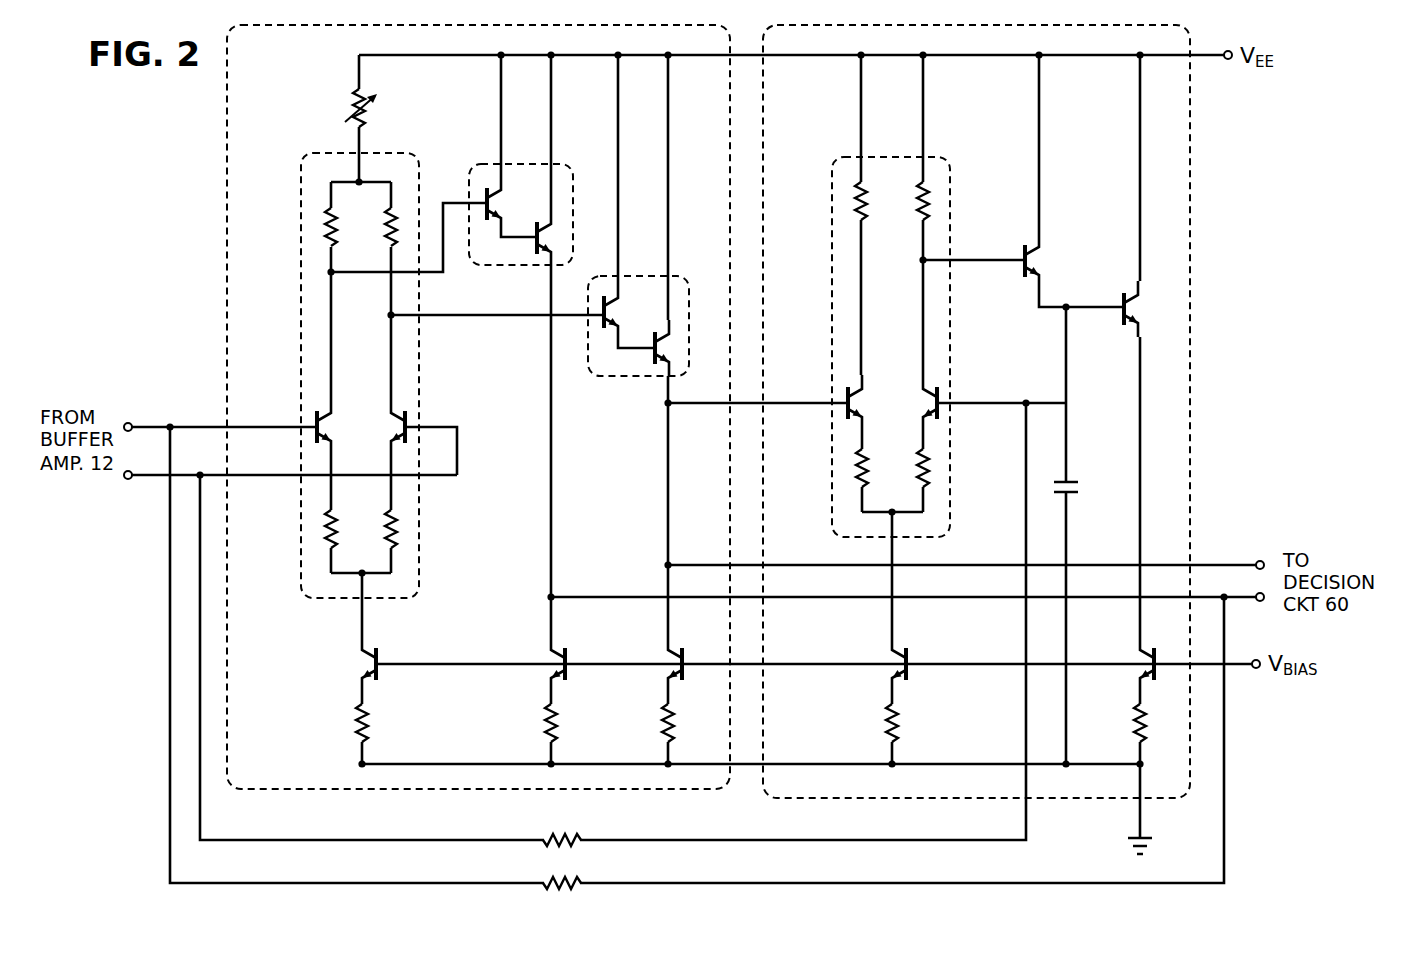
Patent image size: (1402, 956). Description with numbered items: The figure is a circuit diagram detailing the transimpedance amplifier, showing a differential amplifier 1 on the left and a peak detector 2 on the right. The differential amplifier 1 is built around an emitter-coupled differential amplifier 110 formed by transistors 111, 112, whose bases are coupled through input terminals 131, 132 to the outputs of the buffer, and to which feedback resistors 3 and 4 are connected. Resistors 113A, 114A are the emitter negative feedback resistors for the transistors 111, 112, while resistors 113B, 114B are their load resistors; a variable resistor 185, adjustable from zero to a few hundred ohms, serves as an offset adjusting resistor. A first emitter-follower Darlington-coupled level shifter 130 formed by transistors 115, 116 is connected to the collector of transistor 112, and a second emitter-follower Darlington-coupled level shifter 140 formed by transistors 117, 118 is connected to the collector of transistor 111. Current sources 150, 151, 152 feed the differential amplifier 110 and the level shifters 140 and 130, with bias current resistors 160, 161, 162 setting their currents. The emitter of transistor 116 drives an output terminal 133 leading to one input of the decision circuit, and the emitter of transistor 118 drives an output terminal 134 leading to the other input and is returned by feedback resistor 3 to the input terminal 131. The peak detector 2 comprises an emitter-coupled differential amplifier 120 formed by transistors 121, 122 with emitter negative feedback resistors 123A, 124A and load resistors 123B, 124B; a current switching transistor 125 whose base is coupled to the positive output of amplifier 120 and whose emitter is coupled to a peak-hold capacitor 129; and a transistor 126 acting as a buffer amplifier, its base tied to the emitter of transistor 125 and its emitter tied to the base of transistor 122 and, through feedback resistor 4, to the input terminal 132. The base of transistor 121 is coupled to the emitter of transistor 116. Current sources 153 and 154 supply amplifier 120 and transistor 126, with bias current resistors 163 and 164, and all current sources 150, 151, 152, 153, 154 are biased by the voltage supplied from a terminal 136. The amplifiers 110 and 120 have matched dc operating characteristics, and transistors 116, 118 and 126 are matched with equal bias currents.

The differential amplifier 1 is at (226, 206).
The peak detector 2 is at (1190, 204).
The feedback resistor 3 is at (566, 879).
The feedback resistor 4 is at (566, 836).
The emitter-coupled differential amplifier 110 is at (400, 153).
The transistor 111 is at (314, 421).
The transistor 112 is at (409, 421).
The emitter negative feedback resistor 113A is at (326, 532).
The load resistor 113B is at (323, 229).
The emitter negative feedback resistor 114A is at (396, 532).
The load resistor 114B is at (384, 233).
The transistor 115 is at (607, 319).
The transistor 116 is at (653, 359).
The transistor 117 is at (490, 205).
The transistor 118 is at (535, 251).
The emitter-coupled differential amplifier 120 is at (892, 157).
The transistor 121 is at (845, 401).
The transistor 122 is at (941, 401).
The emitter negative feedback resistor 123A is at (857, 475).
The load resistor 123B is at (857, 197).
The emitter negative feedback resistor 124A is at (928, 475).
The load resistor 124B is at (927, 197).
The current switching transistor 125 is at (1030, 259).
The transistor 126 is at (1121, 301).
The peak-hold capacitor 129 is at (1073, 484).
The first emitter-follower Darlington-coupled level shifter 130 is at (640, 276).
The input terminal 131 is at (130, 421).
The input terminal 132 is at (128, 481).
The output terminal 133 is at (1262, 560).
The output terminal 134 is at (1262, 602).
The terminal 136 is at (1256, 670).
The second emitter-follower Darlington-coupled level shifter 140 is at (522, 164).
The current source 150 is at (380, 660).
The current source 151 is at (569, 660).
The current source 152 is at (686, 660).
The current source 153 is at (910, 660).
The current source 154 is at (1151, 657).
The bias current resistor 160 is at (357, 725).
The bias current resistor 161 is at (546, 725).
The bias current resistor 162 is at (663, 725).
The bias current resistor 163 is at (887, 725).
The bias current resistor 164 is at (1135, 725).
The variable resistor 185 is at (369, 110).